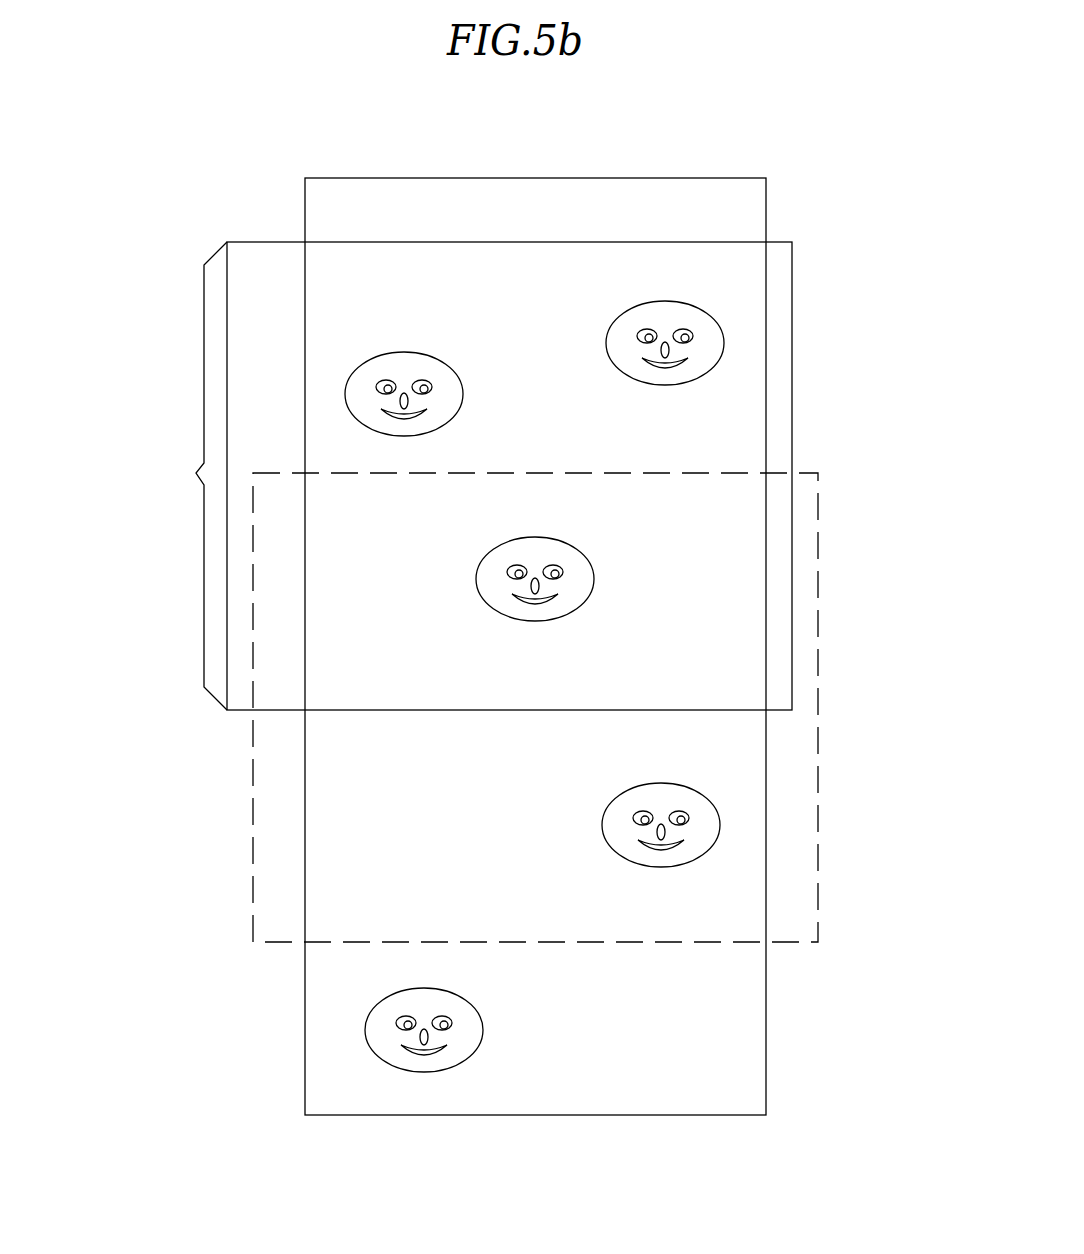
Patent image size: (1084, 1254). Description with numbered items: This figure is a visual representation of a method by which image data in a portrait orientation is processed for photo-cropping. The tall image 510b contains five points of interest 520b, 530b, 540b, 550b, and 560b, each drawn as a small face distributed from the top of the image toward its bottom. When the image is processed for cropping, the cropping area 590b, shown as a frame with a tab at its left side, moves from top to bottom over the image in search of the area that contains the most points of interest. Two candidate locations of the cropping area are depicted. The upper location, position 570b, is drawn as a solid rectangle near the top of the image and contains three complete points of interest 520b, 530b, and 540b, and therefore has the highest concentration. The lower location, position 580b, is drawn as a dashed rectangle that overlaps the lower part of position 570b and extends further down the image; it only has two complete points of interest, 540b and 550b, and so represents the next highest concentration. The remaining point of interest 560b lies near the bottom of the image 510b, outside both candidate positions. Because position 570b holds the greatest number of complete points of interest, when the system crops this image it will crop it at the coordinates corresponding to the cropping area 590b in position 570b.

The image 510b is at (735, 178).
The point of interest 520b is at (658, 302).
The point of interest 530b is at (402, 352).
The point of interest 540b is at (577, 548).
The point of interest 550b is at (625, 792).
The point of interest 560b is at (483, 1028).
The position 570b is at (792, 363).
The position 580b is at (818, 473).
The cropping area 590b is at (196, 473).